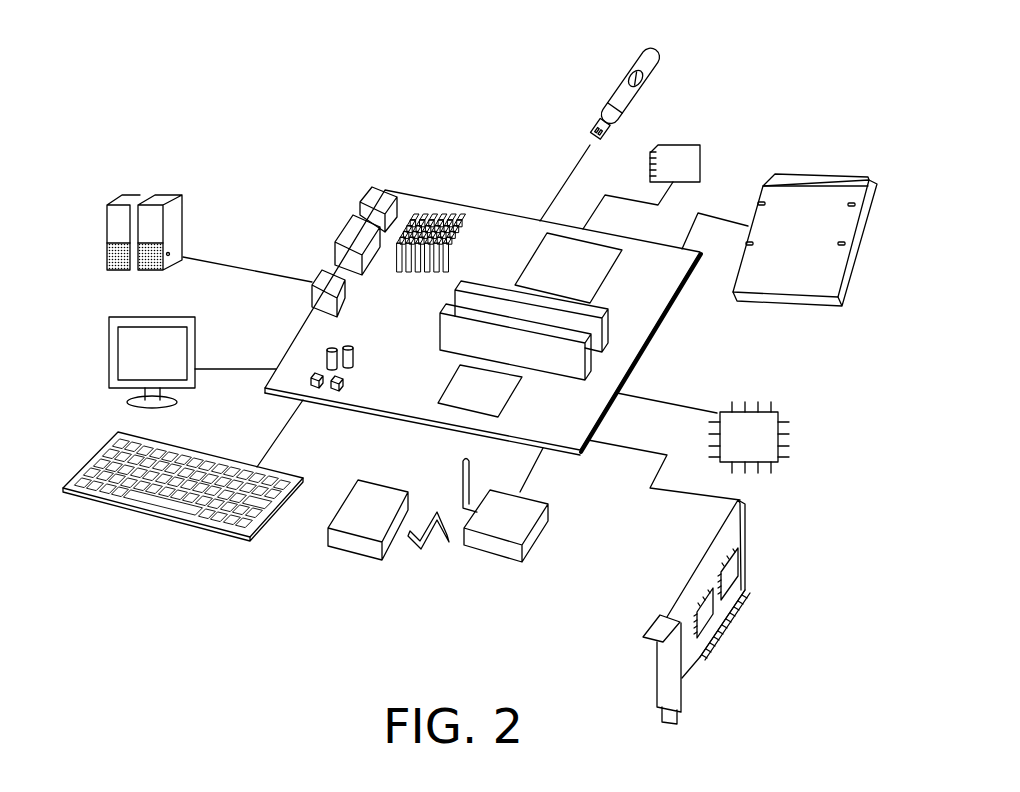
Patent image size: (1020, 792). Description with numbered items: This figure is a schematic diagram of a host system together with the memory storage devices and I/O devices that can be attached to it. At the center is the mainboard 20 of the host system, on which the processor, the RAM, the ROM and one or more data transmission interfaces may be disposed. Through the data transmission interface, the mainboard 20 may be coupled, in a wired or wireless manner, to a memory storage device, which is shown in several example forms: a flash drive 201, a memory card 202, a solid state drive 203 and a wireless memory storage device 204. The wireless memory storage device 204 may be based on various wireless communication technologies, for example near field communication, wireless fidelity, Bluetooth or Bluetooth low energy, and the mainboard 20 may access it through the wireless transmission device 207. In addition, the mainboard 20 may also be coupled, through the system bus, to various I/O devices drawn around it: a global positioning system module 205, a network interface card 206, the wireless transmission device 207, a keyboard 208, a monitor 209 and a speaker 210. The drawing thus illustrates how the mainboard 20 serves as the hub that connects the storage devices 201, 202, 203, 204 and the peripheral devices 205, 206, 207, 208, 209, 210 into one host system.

The mainboard 20 is at (483, 228).
The flash drive 201 is at (603, 85).
The memory card 202 is at (700, 153).
The solid state drive 203 is at (820, 174).
The wireless memory storage device 204 is at (343, 495).
The global positioning system (GPS) module 205 is at (790, 433).
The network interface card 206 is at (745, 557).
The wireless transmission device 207 is at (543, 540).
The keyboard 208 is at (188, 525).
The monitor 209 is at (108, 372).
The speaker 210 is at (105, 257).